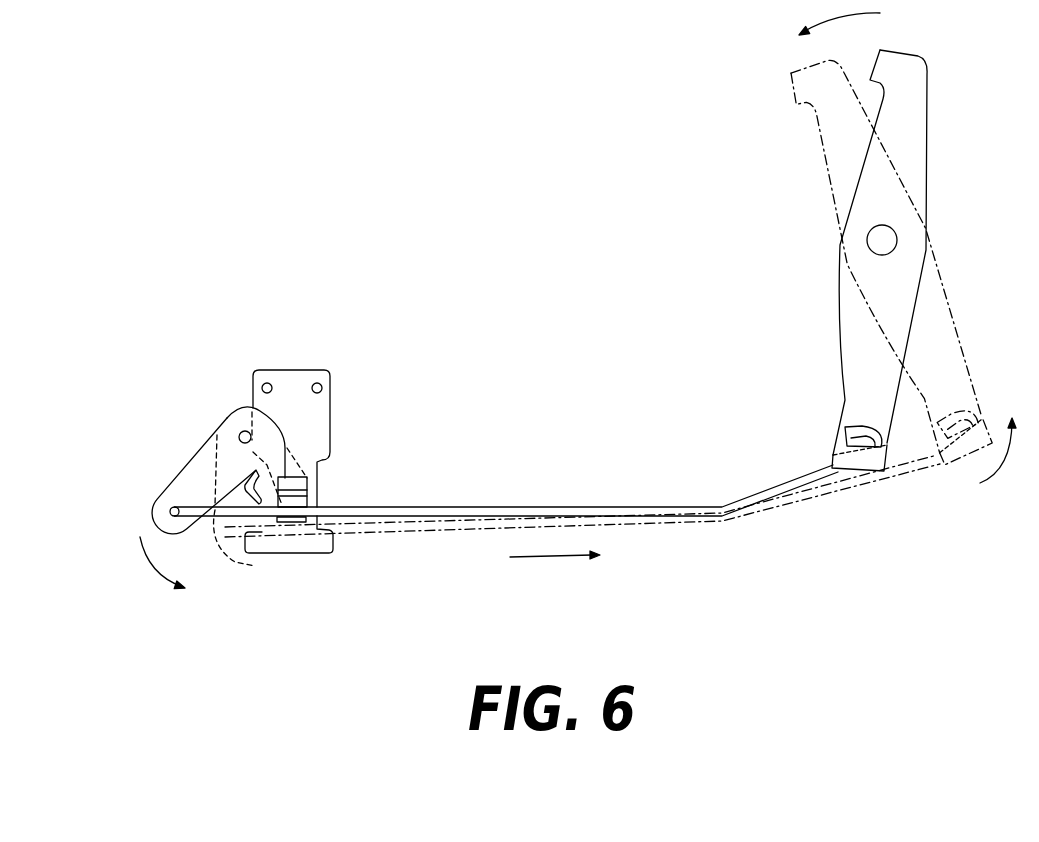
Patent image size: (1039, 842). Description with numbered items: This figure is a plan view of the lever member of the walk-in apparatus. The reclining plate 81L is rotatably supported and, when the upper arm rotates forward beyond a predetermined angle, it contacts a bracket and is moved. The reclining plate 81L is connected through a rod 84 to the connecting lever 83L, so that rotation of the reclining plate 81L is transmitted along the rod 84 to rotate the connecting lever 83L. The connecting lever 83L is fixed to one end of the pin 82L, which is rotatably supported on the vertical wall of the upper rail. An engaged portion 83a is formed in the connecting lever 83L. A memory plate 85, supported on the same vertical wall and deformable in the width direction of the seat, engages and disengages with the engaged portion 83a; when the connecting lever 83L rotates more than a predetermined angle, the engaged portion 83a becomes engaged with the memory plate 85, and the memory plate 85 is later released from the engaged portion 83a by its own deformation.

The reclining plate 81L is at (898, 150).
The pin 82L is at (244, 431).
The connecting lever 83L is at (200, 473).
The engaged portion 83a is at (258, 498).
The rod 84 is at (560, 508).
The memory plate 85 is at (318, 432).